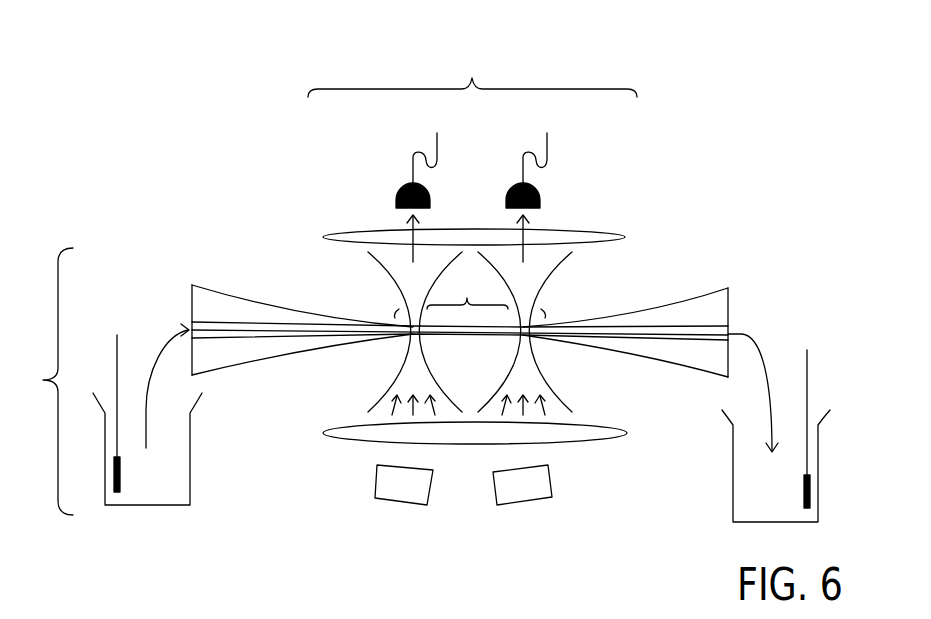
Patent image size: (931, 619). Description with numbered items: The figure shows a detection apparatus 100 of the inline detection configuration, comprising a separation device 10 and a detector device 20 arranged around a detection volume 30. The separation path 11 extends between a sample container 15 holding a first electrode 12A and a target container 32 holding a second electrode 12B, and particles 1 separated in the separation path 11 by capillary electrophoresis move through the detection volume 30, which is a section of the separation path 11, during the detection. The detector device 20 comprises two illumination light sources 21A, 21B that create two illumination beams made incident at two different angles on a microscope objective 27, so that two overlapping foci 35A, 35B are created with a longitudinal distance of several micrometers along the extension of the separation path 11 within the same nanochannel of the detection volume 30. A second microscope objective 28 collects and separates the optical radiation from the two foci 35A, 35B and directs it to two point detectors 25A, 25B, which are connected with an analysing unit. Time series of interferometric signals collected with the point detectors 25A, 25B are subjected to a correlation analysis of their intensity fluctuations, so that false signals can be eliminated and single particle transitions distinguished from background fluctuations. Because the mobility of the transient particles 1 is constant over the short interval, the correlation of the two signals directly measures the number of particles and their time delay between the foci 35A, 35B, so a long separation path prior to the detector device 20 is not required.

The detection apparatus 100 is at (150, 150).
The separation device 10 is at (35, 393).
The separation path 11 is at (238, 308).
The first electrode 12A is at (113, 480).
The second electrode 12B is at (807, 495).
The sample container 15 is at (147, 495).
The detector device 20 is at (487, 70).
The illumination light source 21A is at (392, 483).
The illumination light source 21B is at (538, 487).
The point detector 25A is at (407, 183).
The point detector 25B is at (540, 203).
The microscope objective 27 is at (405, 432).
The microscope objective 28 is at (382, 238).
The detection volume 30 is at (480, 291).
The target container 32 is at (752, 507).
The focus 35A is at (412, 338).
The focus 35B is at (528, 338).
The particles 1 is at (528, 338).